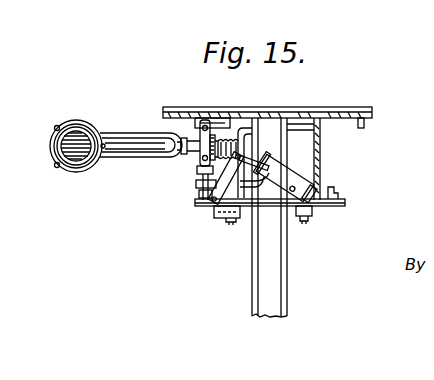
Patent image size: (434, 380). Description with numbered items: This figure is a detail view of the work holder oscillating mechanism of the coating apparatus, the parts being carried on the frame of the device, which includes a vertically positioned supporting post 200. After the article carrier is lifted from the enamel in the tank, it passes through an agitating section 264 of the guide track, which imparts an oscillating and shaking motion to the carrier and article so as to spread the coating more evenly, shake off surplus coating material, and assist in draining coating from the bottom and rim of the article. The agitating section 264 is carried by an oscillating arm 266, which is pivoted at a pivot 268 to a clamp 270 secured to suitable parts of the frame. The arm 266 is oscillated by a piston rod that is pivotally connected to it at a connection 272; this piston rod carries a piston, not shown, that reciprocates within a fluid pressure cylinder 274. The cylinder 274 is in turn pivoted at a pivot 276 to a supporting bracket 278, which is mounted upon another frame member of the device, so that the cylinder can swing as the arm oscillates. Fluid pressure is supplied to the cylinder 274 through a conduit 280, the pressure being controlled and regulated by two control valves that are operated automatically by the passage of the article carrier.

The supporting post 200 is at (275, 259).
The agitating section 264 is at (196, 118).
The oscillating arm 266 is at (252, 125).
The pivot 268 is at (215, 201).
The clamp 270 is at (221, 208).
The piston rod pivotal connection 272 is at (246, 158).
The fluid pressure cylinder 274 is at (284, 180).
The cylinder pivot 276 is at (310, 194).
The supporting bracket 278 is at (314, 207).
The conduit 280 is at (244, 207).